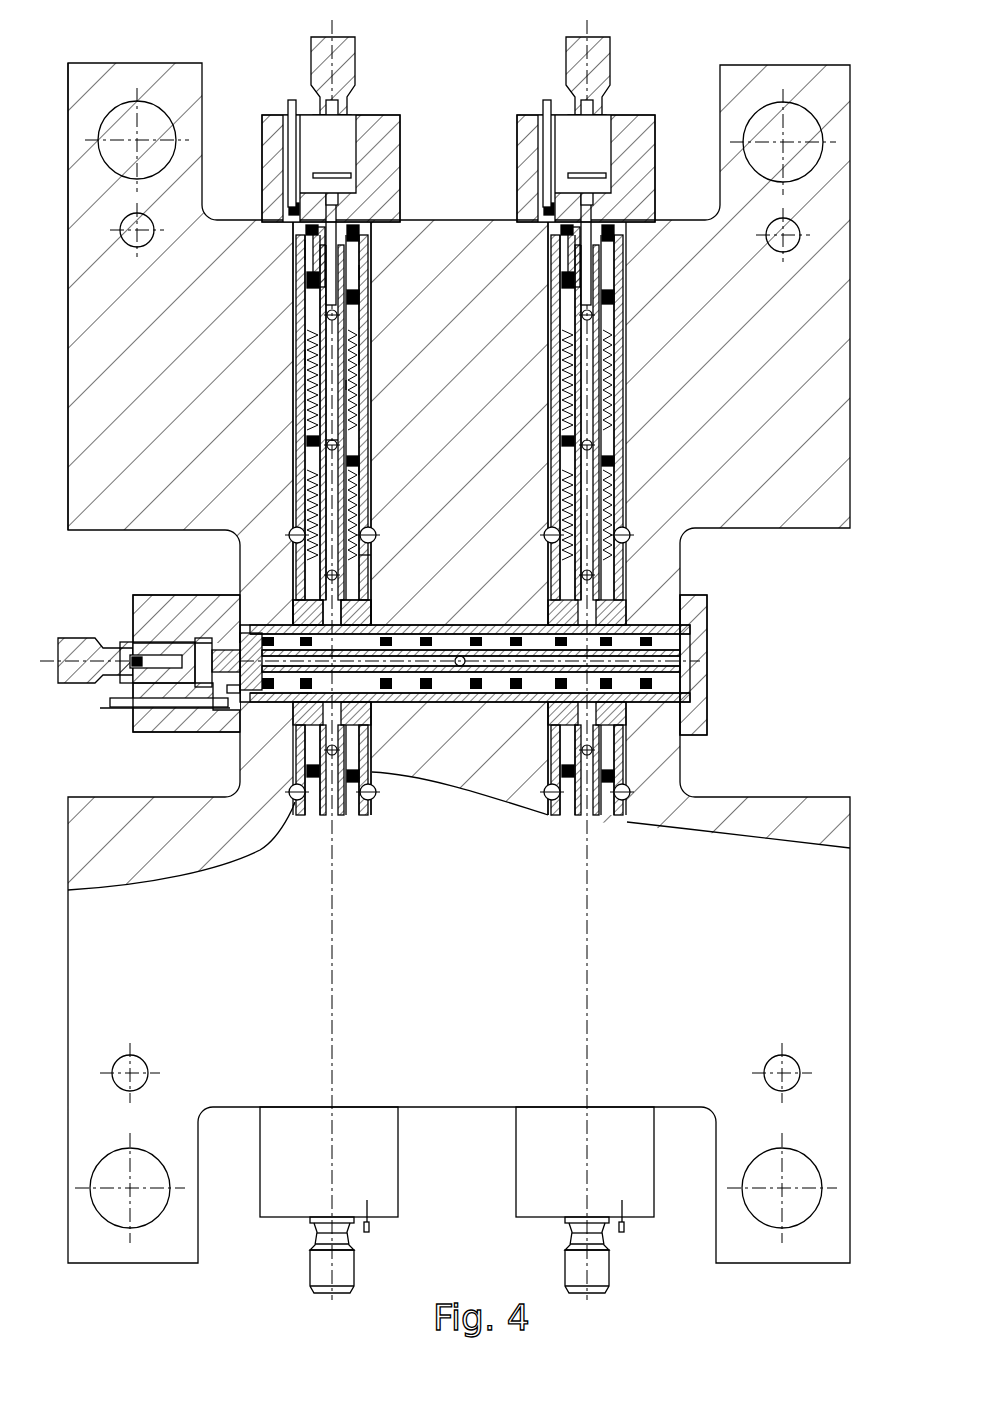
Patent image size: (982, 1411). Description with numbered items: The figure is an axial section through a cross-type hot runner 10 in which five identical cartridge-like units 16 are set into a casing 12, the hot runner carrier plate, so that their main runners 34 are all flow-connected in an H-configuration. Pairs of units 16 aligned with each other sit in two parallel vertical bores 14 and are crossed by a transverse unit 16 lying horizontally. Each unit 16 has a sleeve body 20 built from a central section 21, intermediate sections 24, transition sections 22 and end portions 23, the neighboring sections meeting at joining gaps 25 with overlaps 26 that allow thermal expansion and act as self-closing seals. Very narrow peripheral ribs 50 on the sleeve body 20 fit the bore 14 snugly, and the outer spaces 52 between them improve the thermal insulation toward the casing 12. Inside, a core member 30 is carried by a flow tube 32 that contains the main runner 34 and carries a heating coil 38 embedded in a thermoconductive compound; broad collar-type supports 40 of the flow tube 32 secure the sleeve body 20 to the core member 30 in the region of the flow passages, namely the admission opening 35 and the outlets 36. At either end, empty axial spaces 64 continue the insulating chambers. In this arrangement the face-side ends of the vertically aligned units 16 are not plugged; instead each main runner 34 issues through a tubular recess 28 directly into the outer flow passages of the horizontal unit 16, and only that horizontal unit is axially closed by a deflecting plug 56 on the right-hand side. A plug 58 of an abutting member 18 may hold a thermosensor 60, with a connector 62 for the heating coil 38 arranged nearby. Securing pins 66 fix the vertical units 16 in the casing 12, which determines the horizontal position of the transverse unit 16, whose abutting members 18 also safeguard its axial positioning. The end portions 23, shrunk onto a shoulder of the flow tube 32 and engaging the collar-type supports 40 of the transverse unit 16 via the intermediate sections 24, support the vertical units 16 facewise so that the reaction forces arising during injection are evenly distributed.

The runner 10 is at (96, 1273).
The casing 12 is at (148, 62).
The bore 14 is at (296, 258).
The cartridge-like unit 16 is at (574, 213).
The abutting member 18 is at (377, 113).
The sleeve body 20 is at (263, 118).
The central section 21 is at (555, 470).
The transition section 22 is at (547, 328).
The end portion 23 is at (547, 250).
The intermediate section 24 is at (547, 385).
The joining gap 25 is at (551, 357).
The overlap 26 is at (368, 357).
The tubular recess 28 is at (537, 697).
The core member 30 is at (549, 248).
The flow tube 32 is at (612, 216).
The main runner 34 is at (282, 702).
The admission opening 35 is at (579, 445).
The outlet 36 is at (579, 313).
The heating coil 38 is at (372, 248).
The collar-type support 40 is at (662, 626).
The peripheral rib 50 is at (547, 273).
The outer space 52 is at (547, 566).
The deflecting plug 56 is at (665, 661).
The plug 58 is at (565, 50).
The thermosensor 60 is at (571, 175).
The connector 62 is at (292, 98).
The axial space 64 is at (212, 688).
The securing pin 66 is at (617, 532).